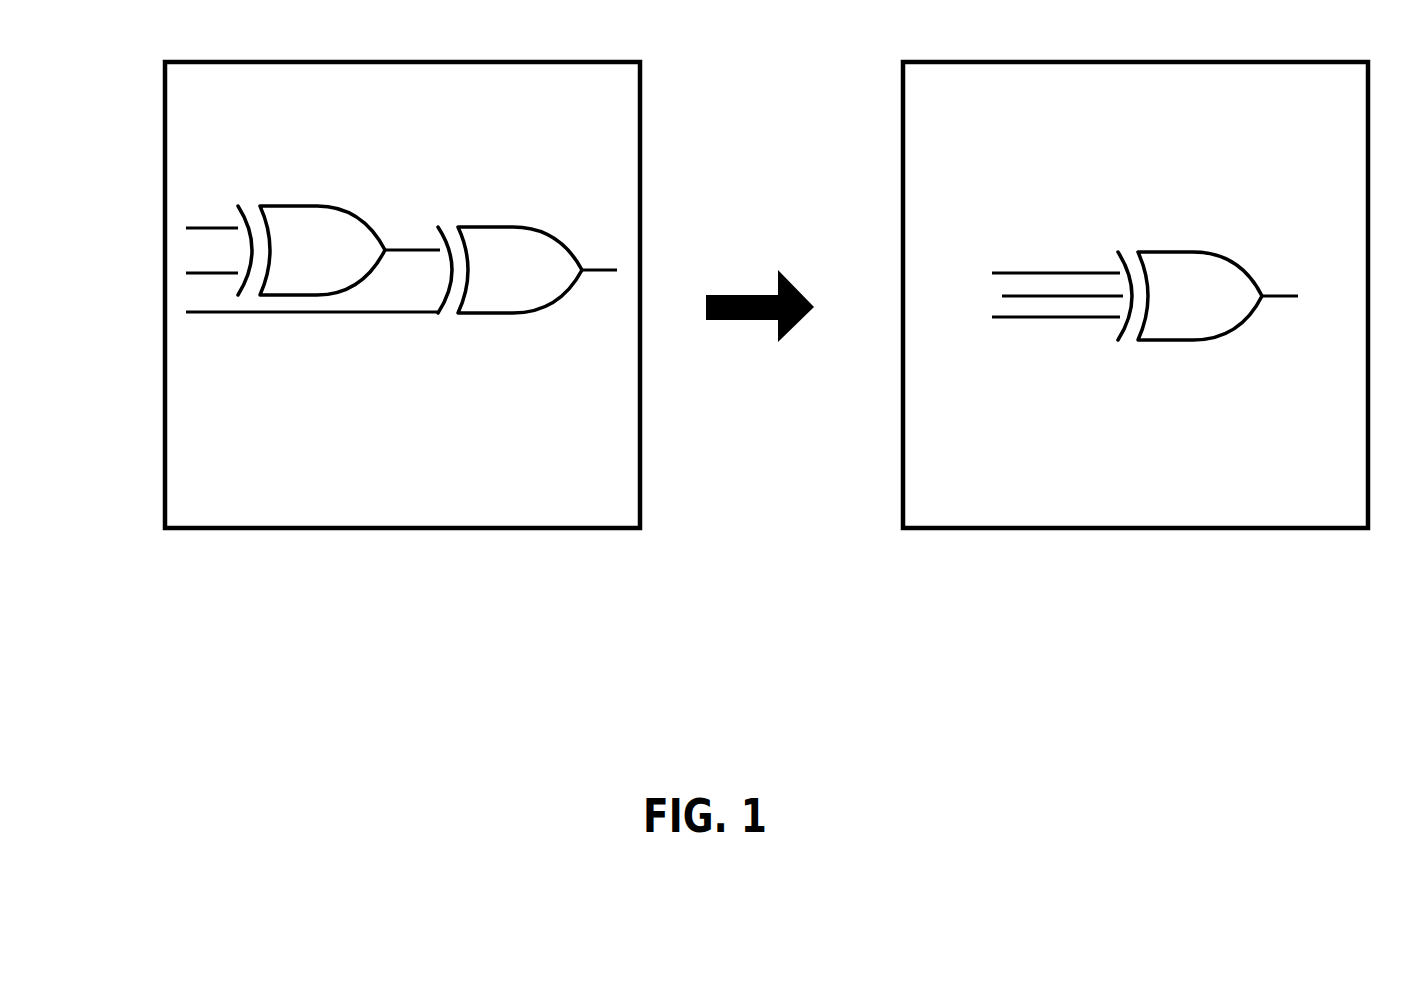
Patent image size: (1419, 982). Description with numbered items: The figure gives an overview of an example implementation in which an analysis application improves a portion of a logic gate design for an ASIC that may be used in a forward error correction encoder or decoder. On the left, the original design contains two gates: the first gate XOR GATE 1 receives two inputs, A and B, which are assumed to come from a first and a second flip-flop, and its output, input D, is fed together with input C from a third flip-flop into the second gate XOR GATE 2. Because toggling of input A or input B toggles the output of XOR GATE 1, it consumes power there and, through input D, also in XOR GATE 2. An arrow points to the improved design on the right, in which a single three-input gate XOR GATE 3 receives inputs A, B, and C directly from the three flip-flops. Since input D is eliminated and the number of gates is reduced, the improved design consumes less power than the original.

The XOR gate XOR GATE 1 is at (317, 206).
The XOR gate XOR GATE 2 is at (538, 193).
The XOR gate XOR GATE 3 is at (1193, 252).